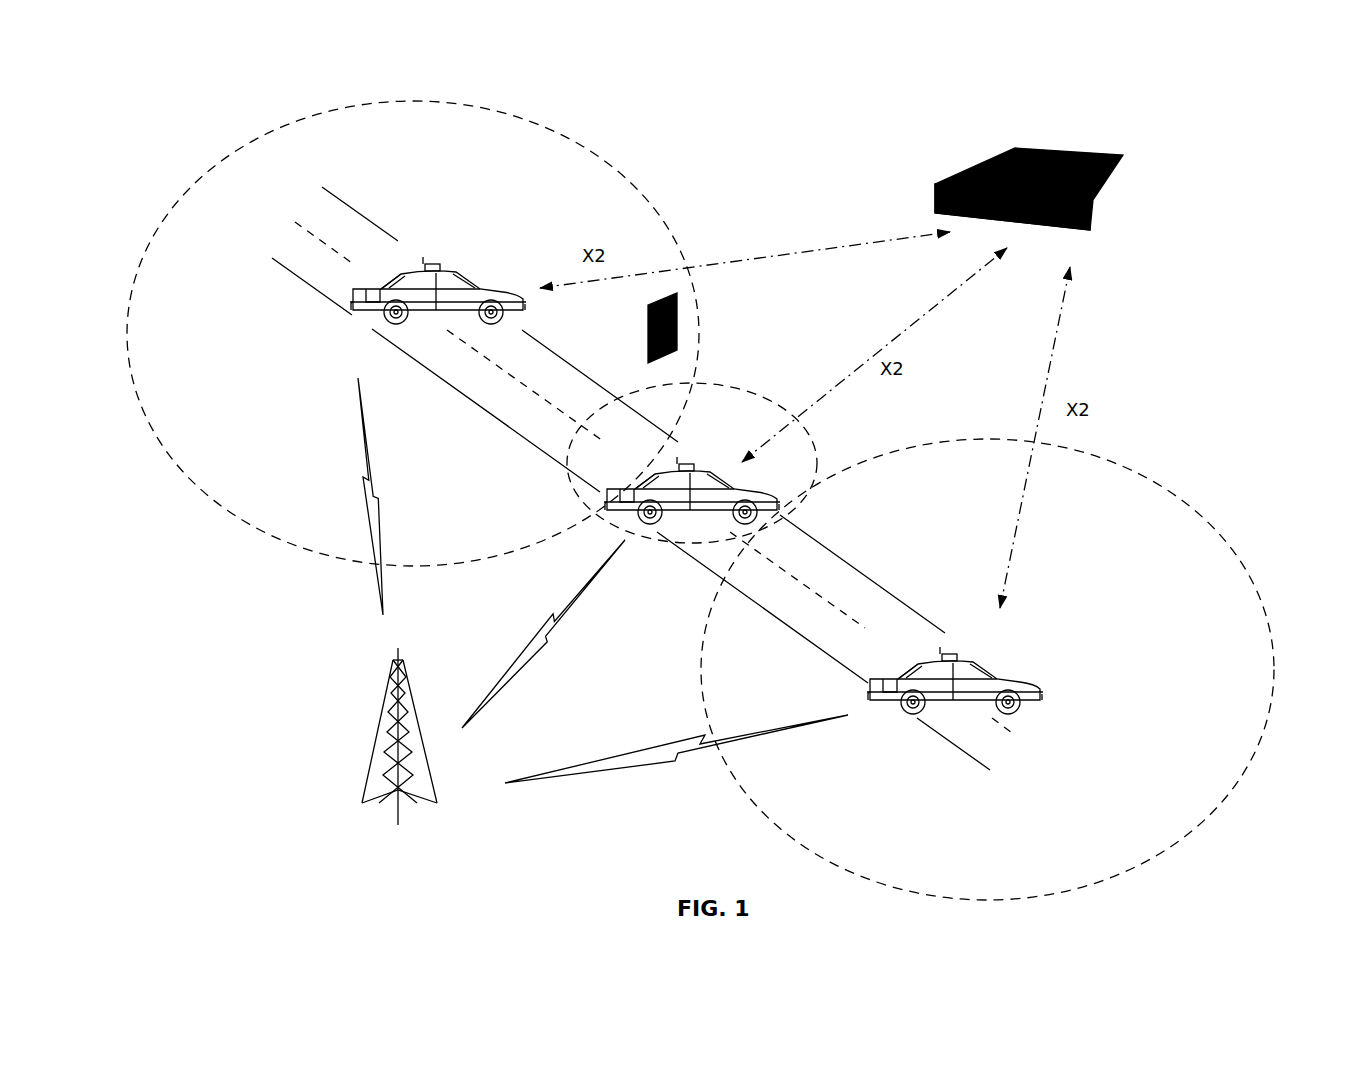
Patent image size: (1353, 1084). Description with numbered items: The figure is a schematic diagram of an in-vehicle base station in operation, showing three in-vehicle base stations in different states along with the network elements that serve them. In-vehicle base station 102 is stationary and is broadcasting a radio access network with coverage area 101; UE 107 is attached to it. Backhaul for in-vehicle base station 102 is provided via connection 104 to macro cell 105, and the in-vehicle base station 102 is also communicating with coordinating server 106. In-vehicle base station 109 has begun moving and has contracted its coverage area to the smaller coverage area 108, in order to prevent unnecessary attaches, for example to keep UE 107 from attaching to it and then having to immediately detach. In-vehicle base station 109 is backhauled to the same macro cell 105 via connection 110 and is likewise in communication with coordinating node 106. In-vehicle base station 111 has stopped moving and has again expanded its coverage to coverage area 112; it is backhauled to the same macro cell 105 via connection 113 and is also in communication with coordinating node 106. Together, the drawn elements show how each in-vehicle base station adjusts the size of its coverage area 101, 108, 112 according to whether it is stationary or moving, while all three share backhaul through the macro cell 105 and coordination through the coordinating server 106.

The coverage area 101 is at (268, 134).
The in-vehicle base station 102 is at (375, 298).
The connection 104 is at (365, 481).
The macro cell 105 is at (353, 713).
The coordinating server 106 is at (987, 163).
The UE 107 is at (682, 335).
The coverage area 108 is at (740, 387).
The in-vehicle base station 109 is at (627, 493).
The connection 110 is at (552, 618).
The in-vehicle base station 111 is at (890, 687).
The coverage area 112 is at (1149, 483).
The connection 113 is at (693, 737).